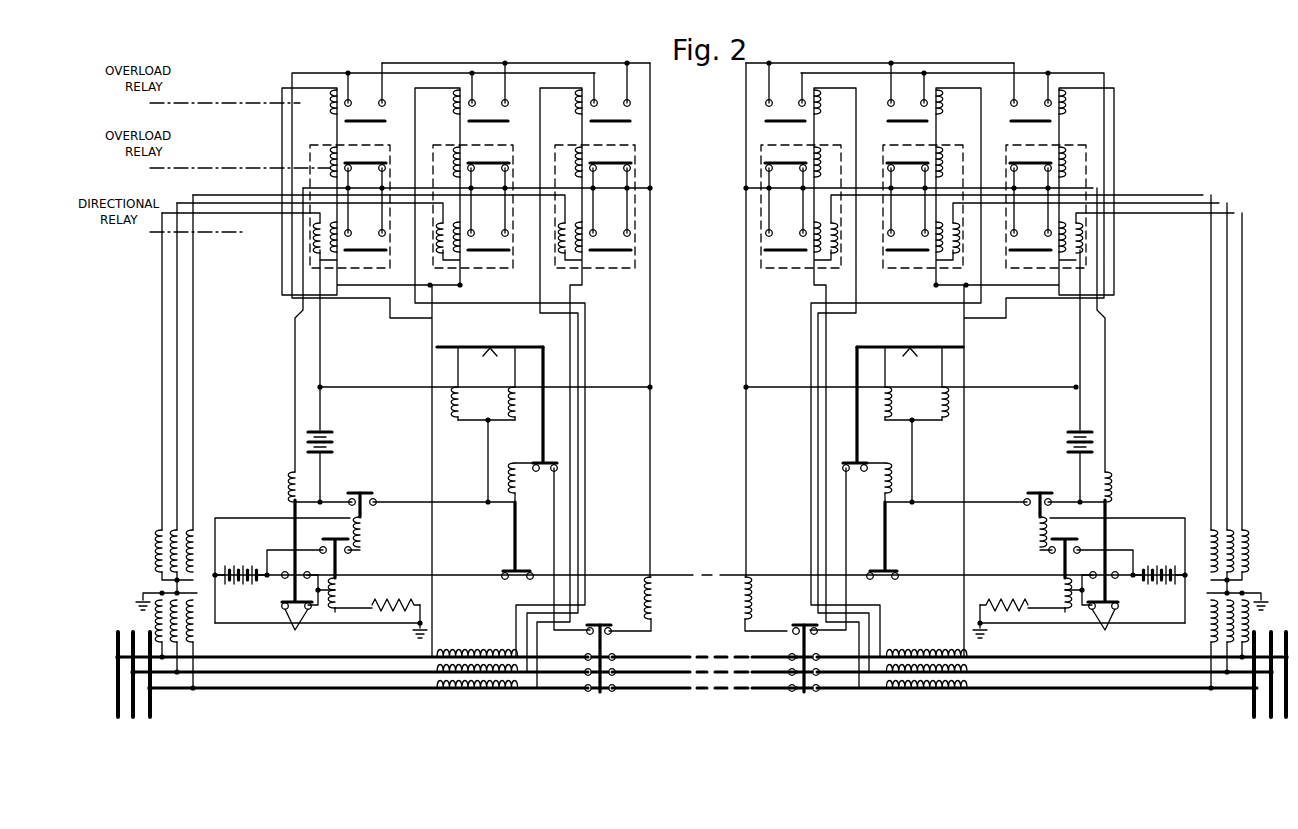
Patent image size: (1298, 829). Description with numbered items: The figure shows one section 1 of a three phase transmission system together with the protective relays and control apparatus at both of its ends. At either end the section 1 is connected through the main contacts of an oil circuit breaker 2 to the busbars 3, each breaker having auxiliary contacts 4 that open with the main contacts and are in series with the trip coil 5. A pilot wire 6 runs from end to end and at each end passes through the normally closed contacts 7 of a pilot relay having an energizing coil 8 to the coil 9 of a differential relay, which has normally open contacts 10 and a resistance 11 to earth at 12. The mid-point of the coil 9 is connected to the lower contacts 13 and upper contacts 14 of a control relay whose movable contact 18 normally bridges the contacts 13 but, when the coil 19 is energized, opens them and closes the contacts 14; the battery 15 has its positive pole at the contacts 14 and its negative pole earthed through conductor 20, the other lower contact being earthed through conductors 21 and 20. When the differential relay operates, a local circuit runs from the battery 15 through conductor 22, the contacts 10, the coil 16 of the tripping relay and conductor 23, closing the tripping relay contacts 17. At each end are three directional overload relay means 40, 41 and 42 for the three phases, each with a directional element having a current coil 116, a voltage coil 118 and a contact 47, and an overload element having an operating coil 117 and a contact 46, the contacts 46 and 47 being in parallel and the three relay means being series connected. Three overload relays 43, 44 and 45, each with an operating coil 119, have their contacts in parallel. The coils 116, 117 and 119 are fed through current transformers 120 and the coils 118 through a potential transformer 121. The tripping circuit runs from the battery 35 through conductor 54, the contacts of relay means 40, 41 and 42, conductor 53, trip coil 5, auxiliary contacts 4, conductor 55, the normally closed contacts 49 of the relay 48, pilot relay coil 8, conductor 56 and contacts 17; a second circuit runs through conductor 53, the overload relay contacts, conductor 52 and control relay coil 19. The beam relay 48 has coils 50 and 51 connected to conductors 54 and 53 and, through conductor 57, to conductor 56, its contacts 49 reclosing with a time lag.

The section 1 is at (708, 686).
The oil circuit breaker 2 is at (614, 655).
The busbars 3 is at (152, 703).
The auxiliary contacts 4 is at (603, 624).
The trip coil 5 is at (656, 595).
The pilot wire 6 is at (692, 578).
The normally closed contacts 7 is at (518, 583).
The energizing coil 8 is at (519, 485).
The coil 9 is at (340, 592).
The normally open contacts 10 is at (330, 540).
The resistance 11 is at (389, 602).
The earth 12 is at (428, 632).
The lower contacts 13 is at (296, 629).
The upper contacts 14 is at (290, 572).
The battery 15 is at (240, 565).
The coil of the tripping relay 16 is at (366, 534).
The tripping relay contacts 17 is at (368, 490).
The movable contact 18 is at (290, 599).
The control relay coil 19 is at (290, 482).
The conductor 20 is at (286, 624).
The conductor 21 is at (262, 624).
The conductor 22 is at (272, 549).
The conductor 23 is at (272, 517).
The battery 35 is at (336, 440).
The directional overload relay means 40 is at (370, 270).
The directional overload relay means 41 is at (492, 270).
The directional overload relay means 42 is at (615, 270).
The overload relay 43 is at (362, 103).
The overload relay 44 is at (486, 103).
The overload relay 45 is at (610, 103).
The contact 46 is at (612, 164).
The contact 47 is at (1028, 247).
The relay 48 is at (500, 349).
The normally closed contacts 49 is at (550, 460).
The coil 50 is at (456, 420).
The coil 51 is at (523, 420).
The conductor 52 is at (302, 368).
The conductor 53 is at (652, 172).
The conductor 54 is at (322, 360).
The conductor 55 is at (556, 515).
The conductor 56 is at (403, 500).
The conductor 57 is at (486, 470).
The current coil 116 is at (330, 246).
The operating coil 117 is at (332, 155).
The voltage coil 118 is at (312, 236).
The operating coil 119 is at (335, 103).
The current transformers 120 is at (440, 700).
The potential transformer 121 is at (162, 582).